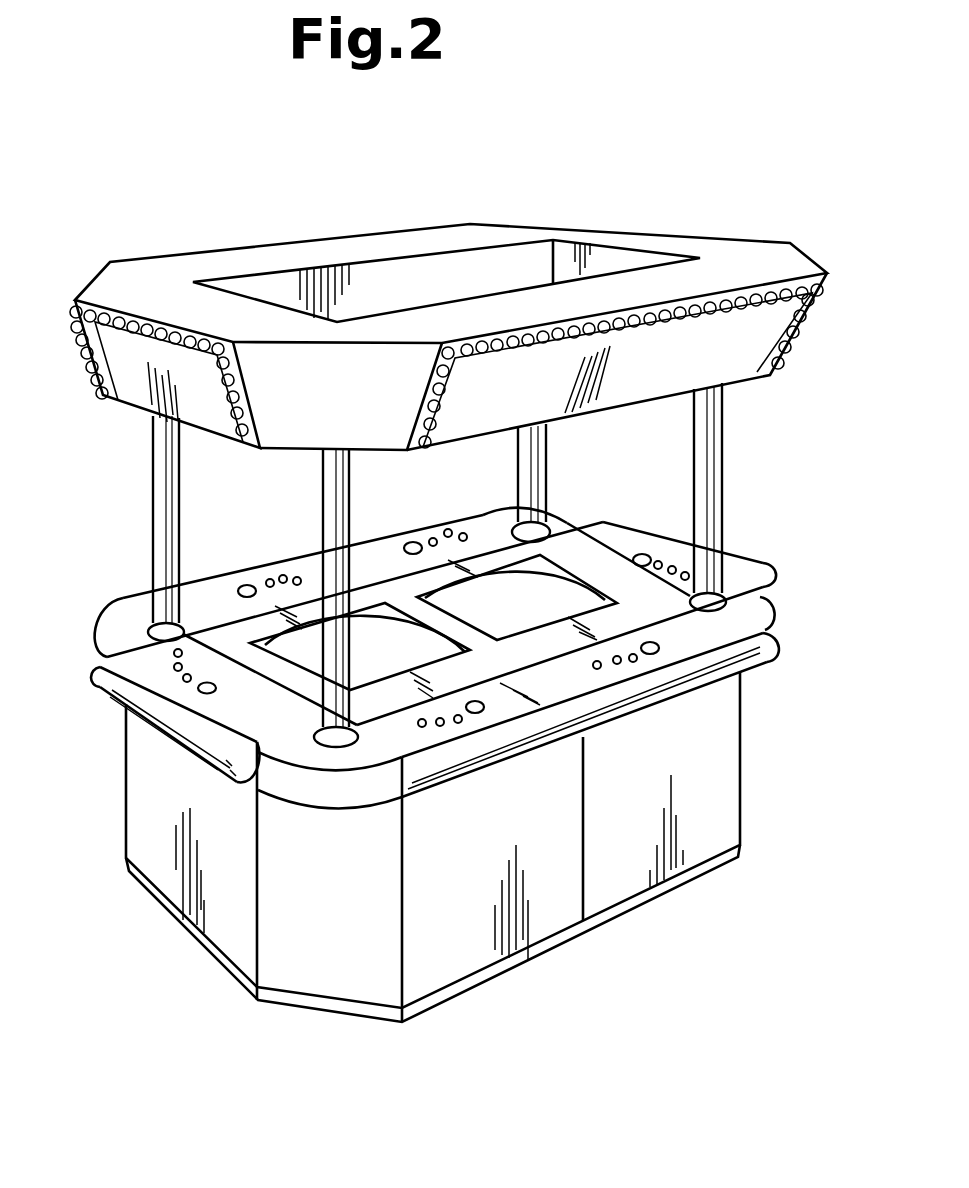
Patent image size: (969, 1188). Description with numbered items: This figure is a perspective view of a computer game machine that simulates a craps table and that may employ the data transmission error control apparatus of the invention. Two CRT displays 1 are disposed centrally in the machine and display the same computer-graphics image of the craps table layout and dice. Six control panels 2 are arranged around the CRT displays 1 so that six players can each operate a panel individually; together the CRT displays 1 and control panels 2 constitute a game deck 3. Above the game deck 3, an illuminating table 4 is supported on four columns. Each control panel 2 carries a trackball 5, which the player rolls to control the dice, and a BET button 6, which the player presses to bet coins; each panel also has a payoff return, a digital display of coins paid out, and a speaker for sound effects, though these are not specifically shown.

The CRT display 1 is at (268, 655).
The control panel 2 is at (138, 588).
The game deck 3 is at (760, 789).
The illuminating table 4 is at (812, 352).
The trackball 5 is at (247, 590).
The BET button 6 is at (118, 665).